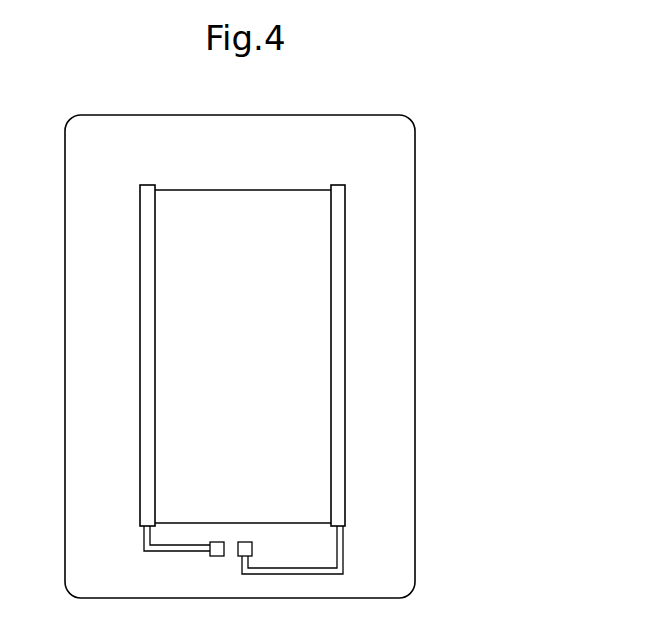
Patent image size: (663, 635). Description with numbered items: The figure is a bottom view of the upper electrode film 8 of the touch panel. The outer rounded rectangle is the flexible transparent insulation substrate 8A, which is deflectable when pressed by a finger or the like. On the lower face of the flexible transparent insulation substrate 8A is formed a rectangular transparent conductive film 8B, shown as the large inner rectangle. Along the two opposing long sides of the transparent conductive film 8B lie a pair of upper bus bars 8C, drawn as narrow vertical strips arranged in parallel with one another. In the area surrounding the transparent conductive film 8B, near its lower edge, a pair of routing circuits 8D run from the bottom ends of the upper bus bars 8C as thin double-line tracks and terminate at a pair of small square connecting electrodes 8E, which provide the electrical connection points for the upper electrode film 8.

The upper electrode film 8 is at (416, 197).
The flexible transparent insulation substrate 8A is at (386, 303).
The transparent conductive film 8B is at (312, 420).
The upper bus bars 8C is at (147, 295).
The routing circuits 8D is at (156, 553).
The connecting electrodes 8E is at (243, 556).